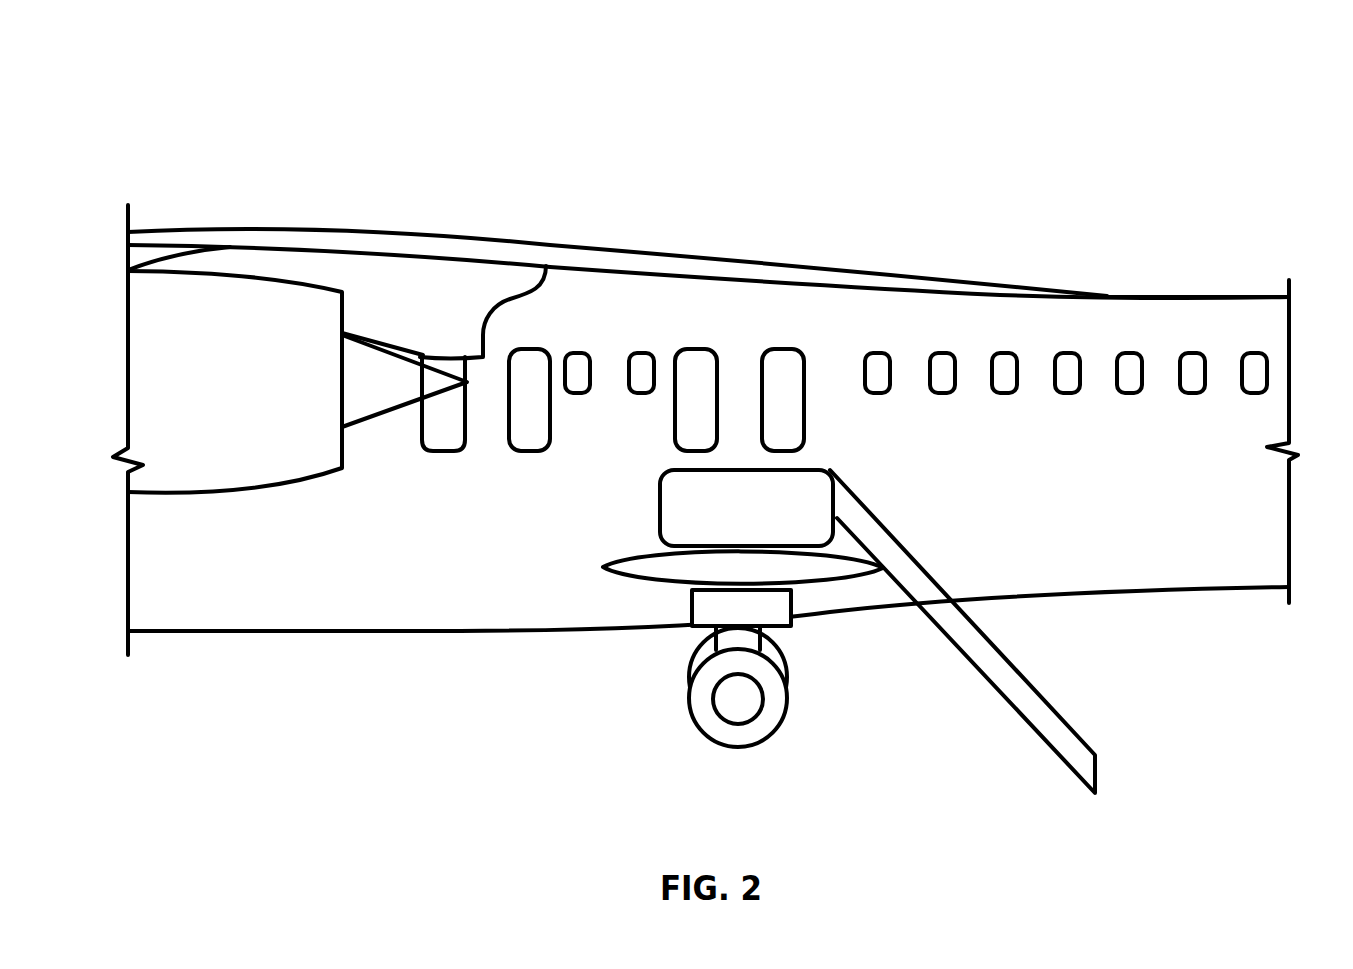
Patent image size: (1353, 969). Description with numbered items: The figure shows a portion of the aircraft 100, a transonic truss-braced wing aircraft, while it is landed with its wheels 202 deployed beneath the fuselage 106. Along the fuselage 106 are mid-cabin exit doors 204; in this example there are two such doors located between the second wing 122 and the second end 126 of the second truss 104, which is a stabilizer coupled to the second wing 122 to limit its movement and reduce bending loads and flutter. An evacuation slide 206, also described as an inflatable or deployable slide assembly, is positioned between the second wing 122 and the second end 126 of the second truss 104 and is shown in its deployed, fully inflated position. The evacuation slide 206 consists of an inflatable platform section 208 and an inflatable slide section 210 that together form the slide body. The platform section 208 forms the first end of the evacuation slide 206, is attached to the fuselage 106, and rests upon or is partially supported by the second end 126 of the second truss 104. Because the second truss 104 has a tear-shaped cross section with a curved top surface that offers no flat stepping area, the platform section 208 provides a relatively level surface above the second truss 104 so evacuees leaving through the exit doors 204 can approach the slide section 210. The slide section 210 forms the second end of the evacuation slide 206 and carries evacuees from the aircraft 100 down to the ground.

The aircraft 100 is at (203, 92).
The second truss 104 is at (672, 567).
The fuselage 106 is at (1187, 507).
The second wing 122 is at (985, 278).
The second end of the second truss 126 is at (627, 568).
The wheels 202 is at (692, 725).
The mid-cabin exit doors 204 is at (693, 348).
The evacuation slide 206 is at (886, 472).
The platform section 208 is at (673, 492).
The slide section 210 is at (1007, 678).